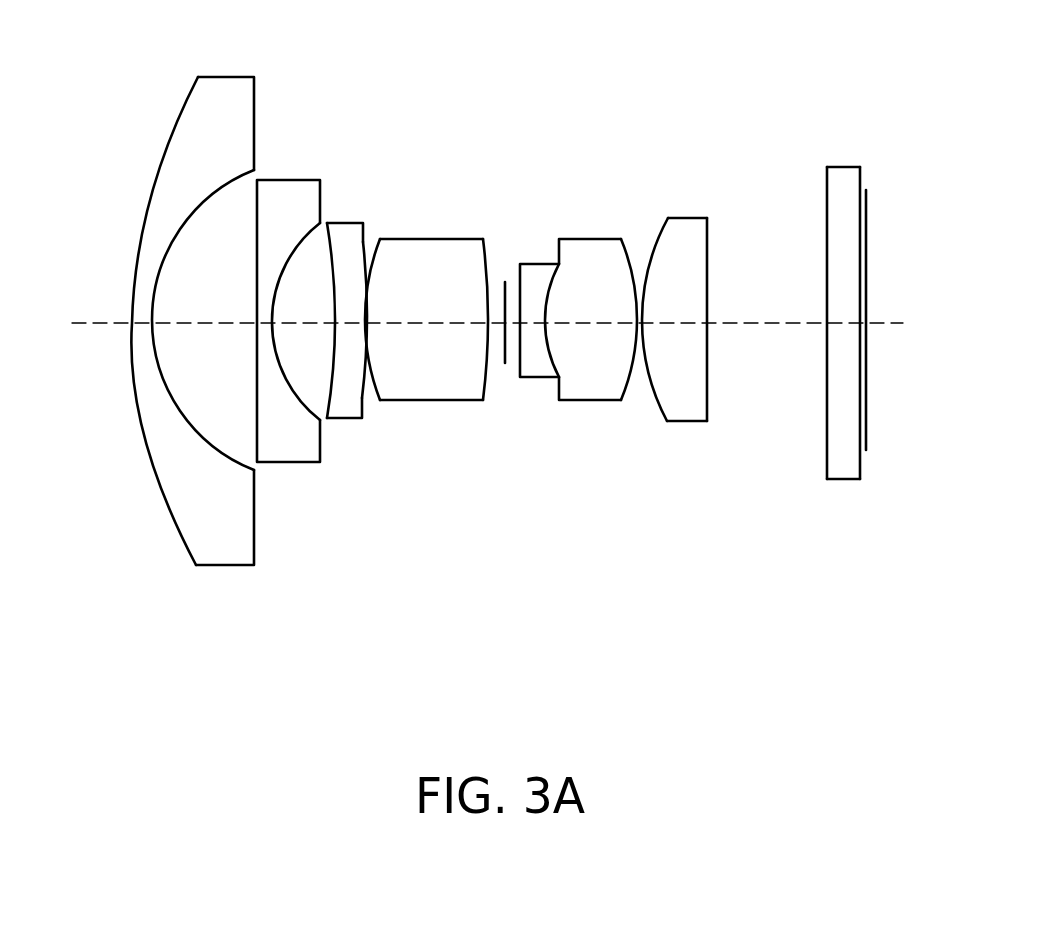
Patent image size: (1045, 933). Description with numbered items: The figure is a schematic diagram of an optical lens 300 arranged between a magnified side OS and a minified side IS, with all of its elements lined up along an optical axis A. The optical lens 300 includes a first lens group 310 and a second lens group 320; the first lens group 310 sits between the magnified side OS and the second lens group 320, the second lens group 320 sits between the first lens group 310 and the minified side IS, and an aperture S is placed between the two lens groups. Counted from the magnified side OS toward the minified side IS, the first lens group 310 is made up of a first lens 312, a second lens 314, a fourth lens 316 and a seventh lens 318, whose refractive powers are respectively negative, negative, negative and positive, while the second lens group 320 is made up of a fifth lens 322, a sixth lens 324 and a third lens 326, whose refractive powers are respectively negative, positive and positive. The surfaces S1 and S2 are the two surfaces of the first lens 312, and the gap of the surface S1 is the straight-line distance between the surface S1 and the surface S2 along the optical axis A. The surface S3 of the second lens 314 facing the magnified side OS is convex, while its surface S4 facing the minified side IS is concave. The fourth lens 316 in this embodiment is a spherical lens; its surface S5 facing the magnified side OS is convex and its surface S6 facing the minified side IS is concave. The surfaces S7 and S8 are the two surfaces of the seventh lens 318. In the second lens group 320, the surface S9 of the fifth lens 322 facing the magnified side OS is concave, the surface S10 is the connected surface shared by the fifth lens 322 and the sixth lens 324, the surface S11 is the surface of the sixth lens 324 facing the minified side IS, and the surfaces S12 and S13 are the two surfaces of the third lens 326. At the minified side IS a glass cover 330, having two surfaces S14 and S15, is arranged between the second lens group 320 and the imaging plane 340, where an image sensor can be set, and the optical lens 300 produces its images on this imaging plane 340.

The optical lens 300 is at (485, 349).
The first lens group 310 is at (311, 346).
The first lens 312 is at (203, 321).
The second lens 314 is at (290, 363).
The fourth lens 316 is at (364, 369).
The seventh lens 318 is at (428, 390).
The second lens group 320 is at (635, 359).
The fifth lens 322 is at (547, 341).
The sixth lens 324 is at (602, 352).
The third lens 326 is at (696, 333).
The glass cover 330 is at (844, 331).
The imaging plane 340 is at (866, 442).
The aperture S is at (505, 366).
The optical axis A is at (97, 327).
The magnified side OS is at (53, 324).
The minified side IS is at (923, 322).
The surface of first lens S1 is at (185, 100).
The surface of first lens S2 is at (202, 218).
The surface of second lens facing magnified side S3 is at (237, 226).
The surface of second lens facing minified side S4 is at (290, 268).
The surface of fourth lens facing magnified side S5 is at (320, 238).
The surface of fourth lens facing minified side S6 is at (353, 292).
The surface of seventh lens S7 is at (364, 296).
The surface of seventh lens S8 is at (492, 250).
The surface of fifth lens facing magnified side S9 is at (518, 275).
The connected surface of fifth lens and sixth lens S10 is at (556, 250).
The surface of sixth lens facing minified side S11 is at (640, 250).
The surface of third lens S12 is at (658, 226).
The surface of third lens S13 is at (713, 242).
The surface of glass cover S14 is at (826, 181).
The surface of glass cover S15 is at (861, 181).